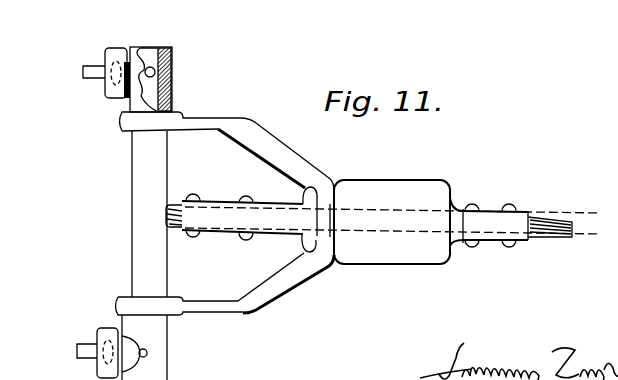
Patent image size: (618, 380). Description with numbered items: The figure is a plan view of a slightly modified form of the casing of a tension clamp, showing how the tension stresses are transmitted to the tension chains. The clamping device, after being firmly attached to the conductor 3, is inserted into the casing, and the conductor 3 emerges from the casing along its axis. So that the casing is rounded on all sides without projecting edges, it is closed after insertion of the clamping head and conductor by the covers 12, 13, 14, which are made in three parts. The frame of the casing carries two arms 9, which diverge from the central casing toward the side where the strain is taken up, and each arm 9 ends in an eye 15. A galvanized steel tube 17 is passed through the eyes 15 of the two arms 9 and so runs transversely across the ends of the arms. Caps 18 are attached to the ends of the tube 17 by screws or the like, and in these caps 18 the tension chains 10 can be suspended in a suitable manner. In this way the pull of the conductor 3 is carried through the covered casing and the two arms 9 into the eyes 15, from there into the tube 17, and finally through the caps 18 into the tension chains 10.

The conductor 3 is at (183, 204).
The arms 9 is at (252, 124).
The tension chains 10 is at (93, 65).
The cover 12 is at (518, 197).
The cover 13 is at (420, 170).
The cover 14 is at (236, 222).
The eyes 15 is at (122, 120).
The galvanized steel tube 17 is at (132, 212).
The caps 18 is at (188, 49).